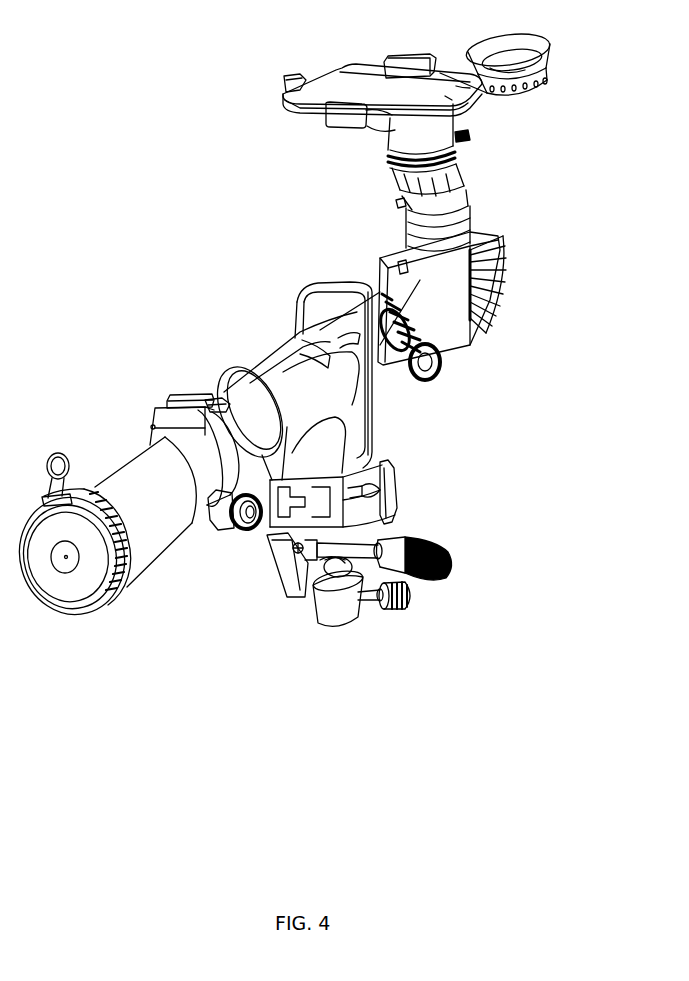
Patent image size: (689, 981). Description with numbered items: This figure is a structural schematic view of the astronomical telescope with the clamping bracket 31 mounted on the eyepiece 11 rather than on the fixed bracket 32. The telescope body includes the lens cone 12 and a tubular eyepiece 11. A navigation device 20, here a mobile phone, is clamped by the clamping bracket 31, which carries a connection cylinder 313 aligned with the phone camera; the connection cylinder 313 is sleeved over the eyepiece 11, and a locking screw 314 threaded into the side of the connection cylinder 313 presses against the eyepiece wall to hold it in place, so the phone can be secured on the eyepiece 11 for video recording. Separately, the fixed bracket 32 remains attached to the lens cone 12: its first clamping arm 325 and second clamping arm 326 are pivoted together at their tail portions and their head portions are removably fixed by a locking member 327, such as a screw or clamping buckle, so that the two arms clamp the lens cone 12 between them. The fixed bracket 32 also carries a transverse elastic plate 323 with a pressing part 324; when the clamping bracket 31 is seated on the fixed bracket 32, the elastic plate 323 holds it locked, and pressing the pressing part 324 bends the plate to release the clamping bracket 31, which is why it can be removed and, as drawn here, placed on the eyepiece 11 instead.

The navigation device 20 is at (372, 80).
The clamping bracket 31 is at (343, 118).
The connection cylinder 313 is at (440, 130).
The locking screw 314 is at (470, 138).
The eyepiece 11 is at (405, 168).
The fixed bracket 32 is at (152, 408).
The elastic plate 323 is at (215, 403).
The pressing part 324 is at (221, 400).
The first clamping arm 325 is at (153, 442).
The second clamping arm 326 is at (228, 453).
The locking member 327 is at (245, 530).
The lens cone 12 is at (160, 530).